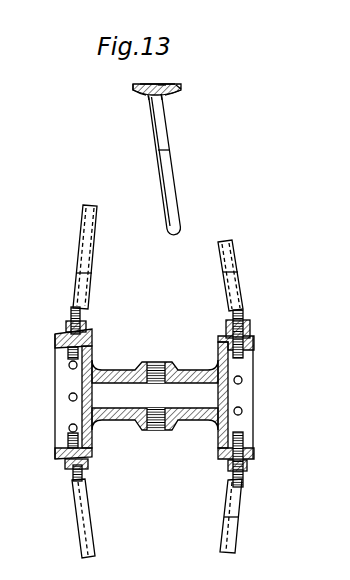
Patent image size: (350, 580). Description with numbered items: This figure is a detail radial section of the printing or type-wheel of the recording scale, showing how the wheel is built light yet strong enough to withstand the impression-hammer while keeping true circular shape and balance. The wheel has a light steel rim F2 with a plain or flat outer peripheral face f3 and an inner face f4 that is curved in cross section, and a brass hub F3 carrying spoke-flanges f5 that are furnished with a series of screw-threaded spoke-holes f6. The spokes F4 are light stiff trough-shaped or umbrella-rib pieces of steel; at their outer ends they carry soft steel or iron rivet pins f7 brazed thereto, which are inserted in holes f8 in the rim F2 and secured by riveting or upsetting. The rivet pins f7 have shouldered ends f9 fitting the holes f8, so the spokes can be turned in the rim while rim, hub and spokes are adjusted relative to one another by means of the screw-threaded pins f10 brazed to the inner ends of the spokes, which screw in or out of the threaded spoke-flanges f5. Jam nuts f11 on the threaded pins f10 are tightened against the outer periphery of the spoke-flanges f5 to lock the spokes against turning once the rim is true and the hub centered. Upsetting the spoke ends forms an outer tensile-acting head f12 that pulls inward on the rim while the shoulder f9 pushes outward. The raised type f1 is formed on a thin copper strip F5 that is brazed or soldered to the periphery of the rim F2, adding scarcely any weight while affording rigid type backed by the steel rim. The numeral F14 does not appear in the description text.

The type f1 is at (158, 84).
The outer peripheral face f3 is at (178, 89).
The inner face f4 is at (140, 96).
The spoke-flanges f5 is at (57, 336).
The spoke-holes f6 is at (68, 367).
The rivet pins f7 is at (162, 125).
The holes f8 is at (162, 86).
The shouldered ends f9 is at (132, 88).
The screw-threaded pins f10 is at (82, 316).
The jam nuts f11 is at (67, 322).
The tensile-acting head f12 is at (157, 85).
The rim F2 is at (181, 92).
The hub F3 is at (142, 362).
The spokes F4 is at (222, 518).
The copper strip F5 is at (174, 88).
The flange bolts F14 is at (72, 352).